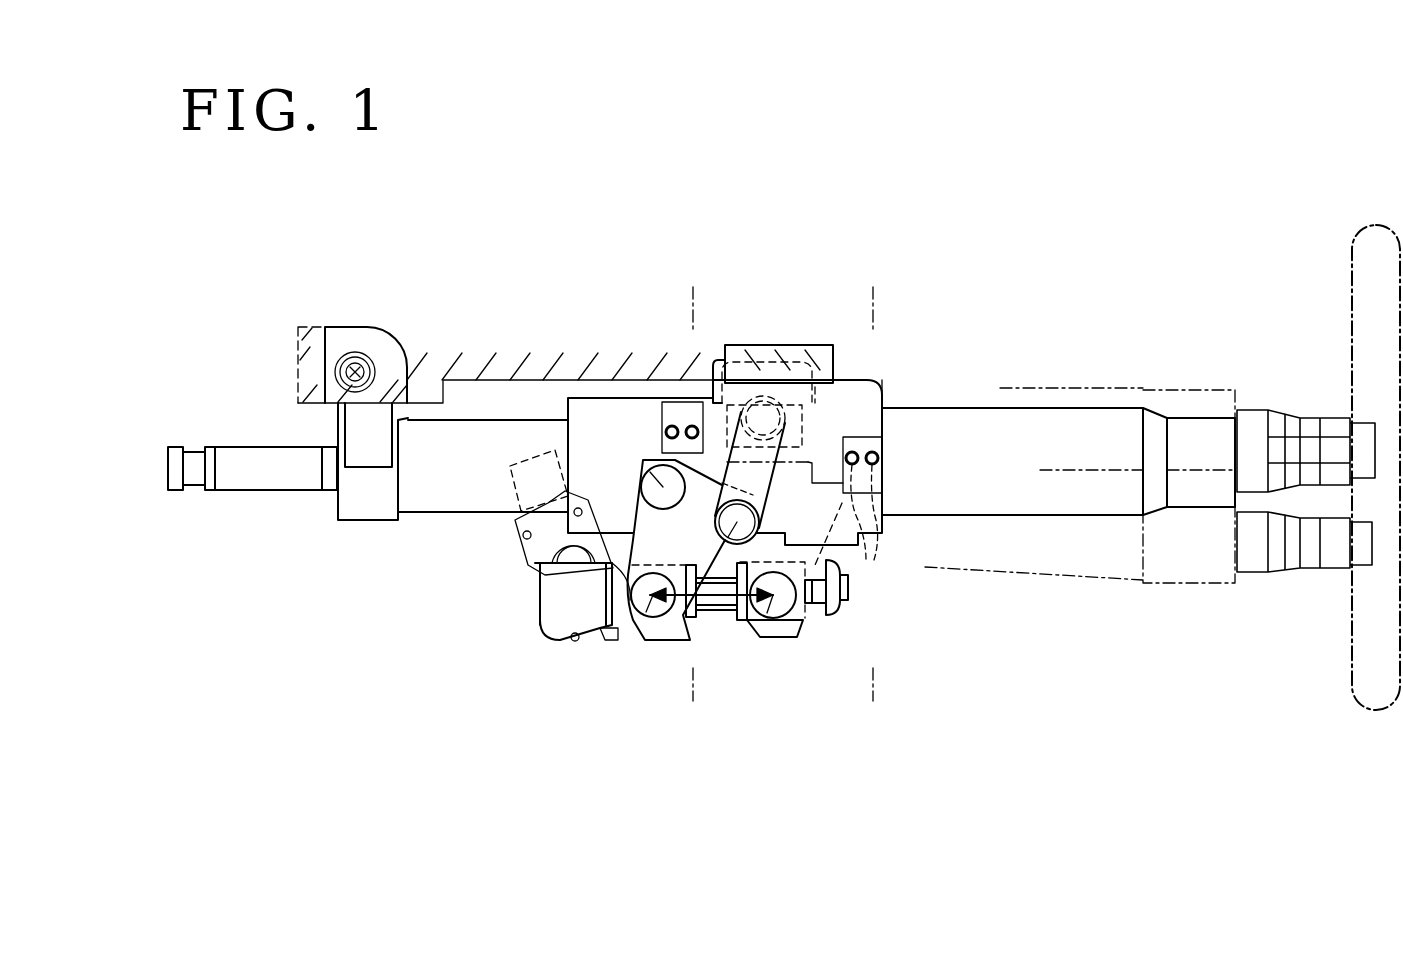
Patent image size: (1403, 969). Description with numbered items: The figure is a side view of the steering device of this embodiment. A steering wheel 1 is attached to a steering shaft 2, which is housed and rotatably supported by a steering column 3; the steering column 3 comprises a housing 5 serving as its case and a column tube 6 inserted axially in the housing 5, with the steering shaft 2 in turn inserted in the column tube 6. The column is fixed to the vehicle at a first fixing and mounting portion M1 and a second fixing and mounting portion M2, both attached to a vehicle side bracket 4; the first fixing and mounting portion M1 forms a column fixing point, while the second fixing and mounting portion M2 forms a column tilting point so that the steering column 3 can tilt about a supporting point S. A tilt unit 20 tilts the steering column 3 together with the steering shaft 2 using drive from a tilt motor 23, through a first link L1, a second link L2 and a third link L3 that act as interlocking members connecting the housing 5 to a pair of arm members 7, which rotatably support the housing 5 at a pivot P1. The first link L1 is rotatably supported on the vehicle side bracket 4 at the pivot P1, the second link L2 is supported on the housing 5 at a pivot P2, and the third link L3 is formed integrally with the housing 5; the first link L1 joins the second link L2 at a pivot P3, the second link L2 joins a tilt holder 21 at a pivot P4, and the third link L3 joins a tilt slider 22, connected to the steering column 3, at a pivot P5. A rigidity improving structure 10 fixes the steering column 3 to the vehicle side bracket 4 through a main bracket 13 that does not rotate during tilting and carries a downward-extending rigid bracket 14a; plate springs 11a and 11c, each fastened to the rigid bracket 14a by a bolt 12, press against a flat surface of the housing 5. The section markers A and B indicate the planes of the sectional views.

The steering wheel 1 is at (1370, 715).
The steering shaft 2 is at (1292, 362).
The steering column 3 is at (1083, 606).
The vehicle side bracket 4 is at (297, 355).
The housing 5 is at (567, 407).
The column tube 6 is at (1047, 388).
The arm members 7 is at (765, 400).
The rigidity improving structure 10 is at (904, 441).
The plate spring 11a is at (883, 483).
The plate spring 11c is at (690, 404).
The bolt 12 is at (670, 428).
The main bracket 13 is at (835, 372).
The rigid bracket 14a is at (884, 362).
The tilt unit 20 is at (500, 660).
The tilt holder 21 is at (585, 642).
The tilt slider 22 is at (782, 636).
The tilt motor 23 is at (530, 568).
The first fixing and mounting portion M1 is at (828, 345).
The second fixing and mounting portion M2 is at (336, 325).
The supporting point S is at (352, 355).
The pivot P1 is at (778, 405).
The pivot P2 is at (650, 472).
The pivot P3 is at (717, 552).
The pivot P4 is at (645, 616).
The pivot P5 is at (767, 616).
The first link L1 is at (757, 478).
The second link L2 is at (687, 620).
The third link L3 is at (845, 590).
The section A- A is at (873, 701).
The section B- B is at (693, 701).